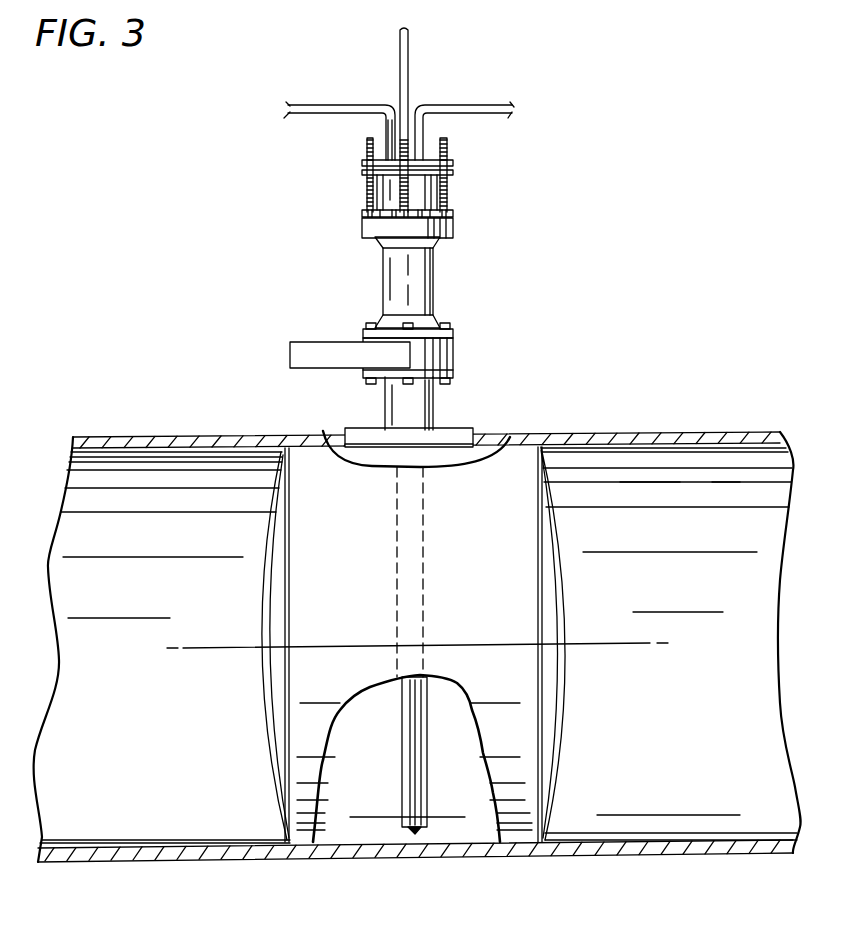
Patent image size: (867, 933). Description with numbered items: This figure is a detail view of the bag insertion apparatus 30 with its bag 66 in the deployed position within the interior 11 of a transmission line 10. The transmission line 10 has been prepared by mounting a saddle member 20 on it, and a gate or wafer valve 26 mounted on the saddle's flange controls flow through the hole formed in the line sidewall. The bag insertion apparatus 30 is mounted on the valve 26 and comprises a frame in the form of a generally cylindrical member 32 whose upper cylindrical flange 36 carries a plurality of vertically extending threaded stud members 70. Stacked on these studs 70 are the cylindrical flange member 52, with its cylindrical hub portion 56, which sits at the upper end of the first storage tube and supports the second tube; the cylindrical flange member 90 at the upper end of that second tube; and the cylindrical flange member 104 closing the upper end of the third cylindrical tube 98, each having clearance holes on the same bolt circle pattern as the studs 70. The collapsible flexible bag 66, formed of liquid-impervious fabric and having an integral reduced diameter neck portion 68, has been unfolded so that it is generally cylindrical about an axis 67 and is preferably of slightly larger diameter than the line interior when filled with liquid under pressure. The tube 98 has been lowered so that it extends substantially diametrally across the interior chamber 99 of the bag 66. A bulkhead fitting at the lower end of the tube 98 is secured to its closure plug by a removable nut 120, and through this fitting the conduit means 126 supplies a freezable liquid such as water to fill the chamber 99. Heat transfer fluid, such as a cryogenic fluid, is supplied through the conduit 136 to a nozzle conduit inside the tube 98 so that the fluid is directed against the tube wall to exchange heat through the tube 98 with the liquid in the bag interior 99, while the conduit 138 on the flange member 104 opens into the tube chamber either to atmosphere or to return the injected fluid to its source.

The transmission line 10 is at (598, 436).
The interior of transmission line 11 is at (706, 496).
The saddle member 20 is at (357, 430).
The gate or wafer valve 26 is at (303, 342).
The bag insertion apparatus 30 is at (463, 212).
The cylindrical member 32 is at (434, 268).
The cylindrical flange 36 is at (454, 226).
The cylindrical flange member 52 is at (385, 195).
The cylindrical hub portion 56 is at (428, 193).
The collapsible flexible bag 66 is at (560, 537).
The axis 67 is at (583, 644).
The reduced diameter neck portion 68 is at (435, 412).
The threaded stud members 70 is at (445, 143).
The cylindrical flange member 90 is at (365, 175).
The third cylindrical tube 98 is at (402, 777).
The interior chamber of the bag 99 is at (378, 747).
The cylindrical flange member 104 is at (383, 158).
The removable nut 120 is at (415, 834).
The conduit means 126 is at (305, 100).
The conduit 136 is at (475, 100).
The conduit 138 is at (407, 43).